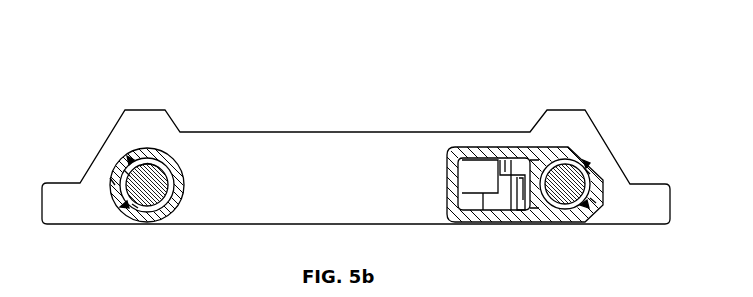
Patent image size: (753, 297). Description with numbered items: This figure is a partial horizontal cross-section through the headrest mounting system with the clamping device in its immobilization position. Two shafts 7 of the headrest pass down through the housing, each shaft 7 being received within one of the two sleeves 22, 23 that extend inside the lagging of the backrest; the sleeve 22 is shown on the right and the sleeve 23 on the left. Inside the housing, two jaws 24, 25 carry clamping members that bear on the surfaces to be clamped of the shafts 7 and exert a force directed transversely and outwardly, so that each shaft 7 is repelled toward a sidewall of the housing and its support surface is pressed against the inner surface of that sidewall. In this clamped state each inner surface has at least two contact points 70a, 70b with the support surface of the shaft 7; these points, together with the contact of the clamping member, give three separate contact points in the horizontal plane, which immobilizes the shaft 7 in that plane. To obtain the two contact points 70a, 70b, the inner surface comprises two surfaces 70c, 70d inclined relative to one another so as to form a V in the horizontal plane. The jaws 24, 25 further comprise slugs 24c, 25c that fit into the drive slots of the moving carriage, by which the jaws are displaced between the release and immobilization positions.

The shaft 7 is at (113, 178).
The sleeve 22 is at (497, 152).
The sleeve 23 is at (152, 217).
The jaw 24 is at (160, 172).
The slug 24c is at (154, 172).
The jaw 25 is at (517, 210).
The slug 25c is at (545, 195).
The contact point 70a is at (130, 158).
The contact point 70b is at (122, 205).
The inclined surface 70c is at (121, 170).
The inclined surface 70d is at (134, 203).